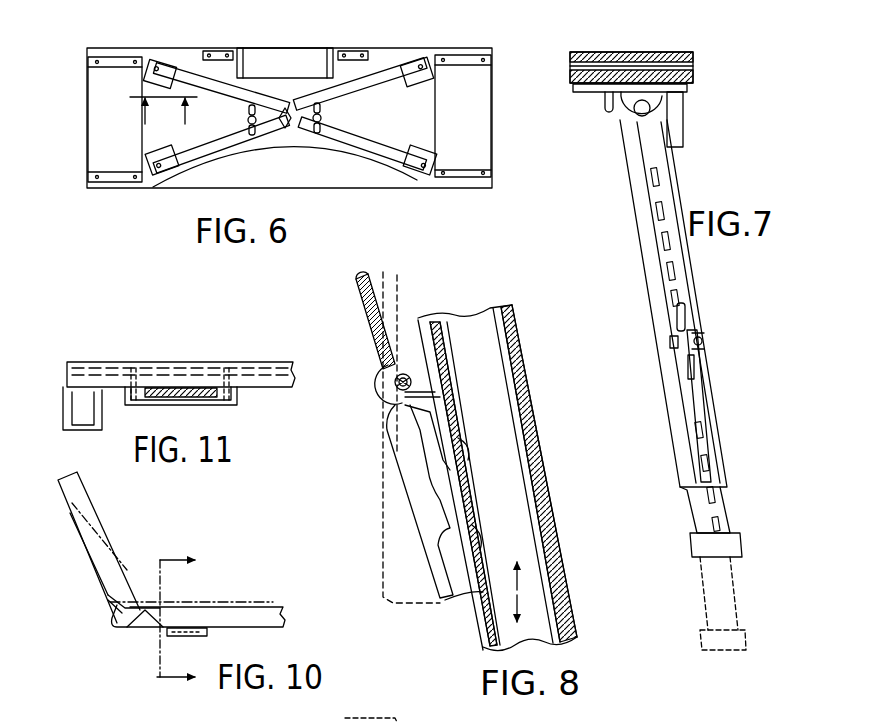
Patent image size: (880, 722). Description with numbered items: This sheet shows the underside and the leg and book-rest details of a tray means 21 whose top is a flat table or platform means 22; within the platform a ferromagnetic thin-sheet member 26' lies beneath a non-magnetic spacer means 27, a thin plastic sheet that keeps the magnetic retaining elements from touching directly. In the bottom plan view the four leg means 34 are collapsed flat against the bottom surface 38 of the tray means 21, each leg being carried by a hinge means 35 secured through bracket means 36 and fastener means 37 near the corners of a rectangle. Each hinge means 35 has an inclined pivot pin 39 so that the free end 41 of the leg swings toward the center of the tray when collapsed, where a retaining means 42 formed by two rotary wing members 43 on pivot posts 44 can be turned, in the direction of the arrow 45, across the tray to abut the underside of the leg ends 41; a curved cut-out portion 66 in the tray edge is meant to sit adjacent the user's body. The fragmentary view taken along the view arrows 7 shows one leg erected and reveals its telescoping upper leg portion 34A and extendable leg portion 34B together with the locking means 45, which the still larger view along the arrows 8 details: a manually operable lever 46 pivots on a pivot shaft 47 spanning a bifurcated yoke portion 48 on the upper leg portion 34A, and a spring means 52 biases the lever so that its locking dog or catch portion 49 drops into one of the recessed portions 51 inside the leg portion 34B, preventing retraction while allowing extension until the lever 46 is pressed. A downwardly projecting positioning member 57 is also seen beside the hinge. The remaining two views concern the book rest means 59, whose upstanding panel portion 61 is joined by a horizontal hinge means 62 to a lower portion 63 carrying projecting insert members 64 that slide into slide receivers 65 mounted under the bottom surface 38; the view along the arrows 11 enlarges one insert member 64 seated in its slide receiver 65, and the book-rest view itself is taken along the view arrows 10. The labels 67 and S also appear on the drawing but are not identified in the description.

In FIG. 6, the tray means 21 is at (385, 46).
In FIG. 7, the tray means 21 is at (710, 60).
In FIG. 11, the tray means 21 is at (121, 350).
In FIG. 10, the tray means 21 is at (283, 605).
In FIG. 7, the platform means 22 is at (682, 50).
In FIG. 11, the platform means 22 is at (260, 361).
In FIG. 7, the ferromagnetic thin-sheet member 26' is at (730, 72).
In FIG. 7, the non-magnetic spacer means 27 is at (590, 55).
In FIG. 6, the leg means 34 is at (198, 70).
In FIG. 7, the leg means 34 is at (643, 385).
In FIG. 7, the upper leg portion 34A is at (633, 203).
In FIG. 8, the upper leg portion 34A is at (527, 388).
In FIG. 7, the extendable leg portion 34B is at (698, 508).
In FIG. 8, the extendable leg portion 34B is at (558, 652).
In FIG. 6, the hinge means 35 is at (153, 60).
In FIG. 7, the hinge means 35 is at (601, 108).
In FIG. 6, the bracket means 36 is at (420, 62).
In FIG. 7, the bracket means 36 is at (690, 86).
In FIG. 6, the fastener means 37 is at (420, 97).
In FIG. 7, the fastener means 37 is at (670, 52).
In FIG. 6, the bottom surface 38 is at (402, 111).
In FIG. 6, the pivot pin 39 is at (404, 186).
In FIG. 7, the pivot pin 39 is at (640, 110).
In FIG. 6, the free end 41 is at (300, 133).
In FIG. 7, the free end 41 is at (673, 470).
In FIG. 6, the leg retaining means 42 is at (255, 106).
In FIG. 6, the rotary wing members 43 is at (328, 118).
In FIG. 6, the pivot posts 44 is at (246, 120).
In FIG. 6, the locking means 45 is at (299, 121).
In FIG. 7, the locking means 45 is at (704, 360).
In FIG. 8, the locking means 45 is at (378, 432).
In FIG. 7, the manually operable lever 46 is at (688, 318).
In FIG. 8, the manually operable lever 46 is at (385, 378).
In FIG. 7, the pivot shaft 47 is at (670, 343).
In FIG. 8, the pivot shaft 47 is at (412, 382).
In FIG. 7, the bifurcated yoke portion 48 is at (705, 342).
In FIG. 8, the bifurcated yoke portion 48 is at (427, 398).
In FIG. 7, the locking dog 49 is at (688, 377).
In FIG. 8, the locking dog 49 is at (475, 600).
In FIG. 7, the recessed portions 51 is at (706, 432).
In FIG. 8, the recessed portions 51 is at (466, 460).
In FIG. 8, the spring means 52 is at (386, 318).
In FIG. 7, the downwardly projecting positioning members 57 is at (685, 125).
In FIG. 10, the book rest means 59 is at (85, 566).
In FIG. 10, the upstanding panel portion 61 is at (78, 538).
In FIG. 10, the hinge means 62 is at (118, 598).
In FIG. 10, the lower portion 63 is at (142, 618).
In FIG. 11, the projecting insert members 64 is at (165, 393).
In FIG. 10, the projecting insert members 64 is at (207, 632).
In FIG. 11, the slide receivers 65 is at (195, 400).
In FIG. 10, the slide receivers 65 is at (172, 636).
In FIG. 6, the curved cut-out portion 66 is at (246, 176).
In FIG. 10, the table section 67 is at (350, 717).
In FIG. 6, the view arrows 7— 7 is at (164, 119).
In FIG. 7, the view arrows 8— 8 is at (668, 284).
In FIG. 10, the view arrows 11— 11 is at (190, 617).
In FIG. 10, the view arrows 10— 10 is at (265, 720).
In FIG. 7, the slot S is at (674, 255).
In FIG. 8, the slot S is at (458, 495).